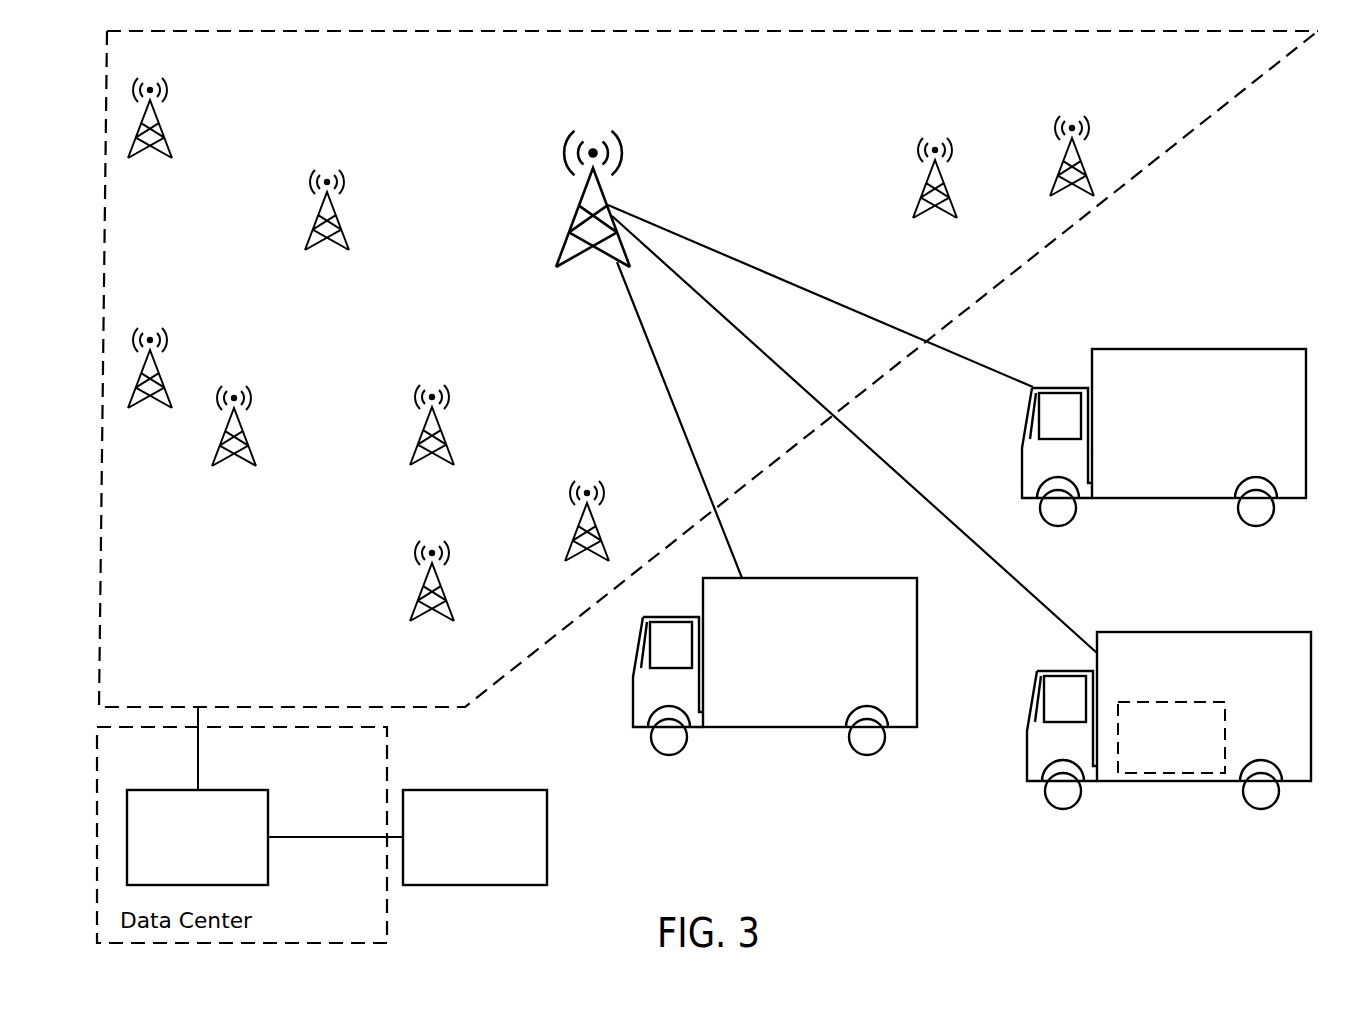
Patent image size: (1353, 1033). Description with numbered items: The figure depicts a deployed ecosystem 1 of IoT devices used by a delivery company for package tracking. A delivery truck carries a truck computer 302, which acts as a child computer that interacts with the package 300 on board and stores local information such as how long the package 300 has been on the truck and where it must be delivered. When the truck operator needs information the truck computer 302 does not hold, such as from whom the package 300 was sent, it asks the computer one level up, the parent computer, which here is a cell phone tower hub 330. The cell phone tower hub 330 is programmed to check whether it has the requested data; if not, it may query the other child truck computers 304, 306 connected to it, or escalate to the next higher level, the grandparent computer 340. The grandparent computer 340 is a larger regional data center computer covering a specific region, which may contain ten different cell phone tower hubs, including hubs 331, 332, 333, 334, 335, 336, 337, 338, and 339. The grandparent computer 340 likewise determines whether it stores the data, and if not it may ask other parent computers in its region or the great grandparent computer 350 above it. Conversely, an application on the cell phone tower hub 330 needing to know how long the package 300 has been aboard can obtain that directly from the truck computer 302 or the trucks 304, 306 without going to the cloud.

The system 1 is at (1273, 162).
The package 300 is at (1207, 703).
The truck computer 302 is at (1267, 630).
The truck computer 304 is at (1260, 348).
The truck computer 306 is at (873, 578).
The cell phone tower hub 330 is at (618, 137).
The cell phone tower hub 331 is at (167, 82).
The cell phone tower hub 332 is at (333, 172).
The cell phone tower hub 333 is at (153, 330).
The cell phone tower hub 334 is at (245, 388).
The cell phone tower hub 335 is at (450, 377).
The cell phone tower hub 336 is at (433, 527).
The cell phone tower hub 337 is at (592, 473).
The cell phone tower hub 338 is at (945, 128).
The cell phone tower hub 339 is at (1077, 120).
The grandparent computer 340 is at (258, 792).
The great grandparent computer 350 is at (540, 792).